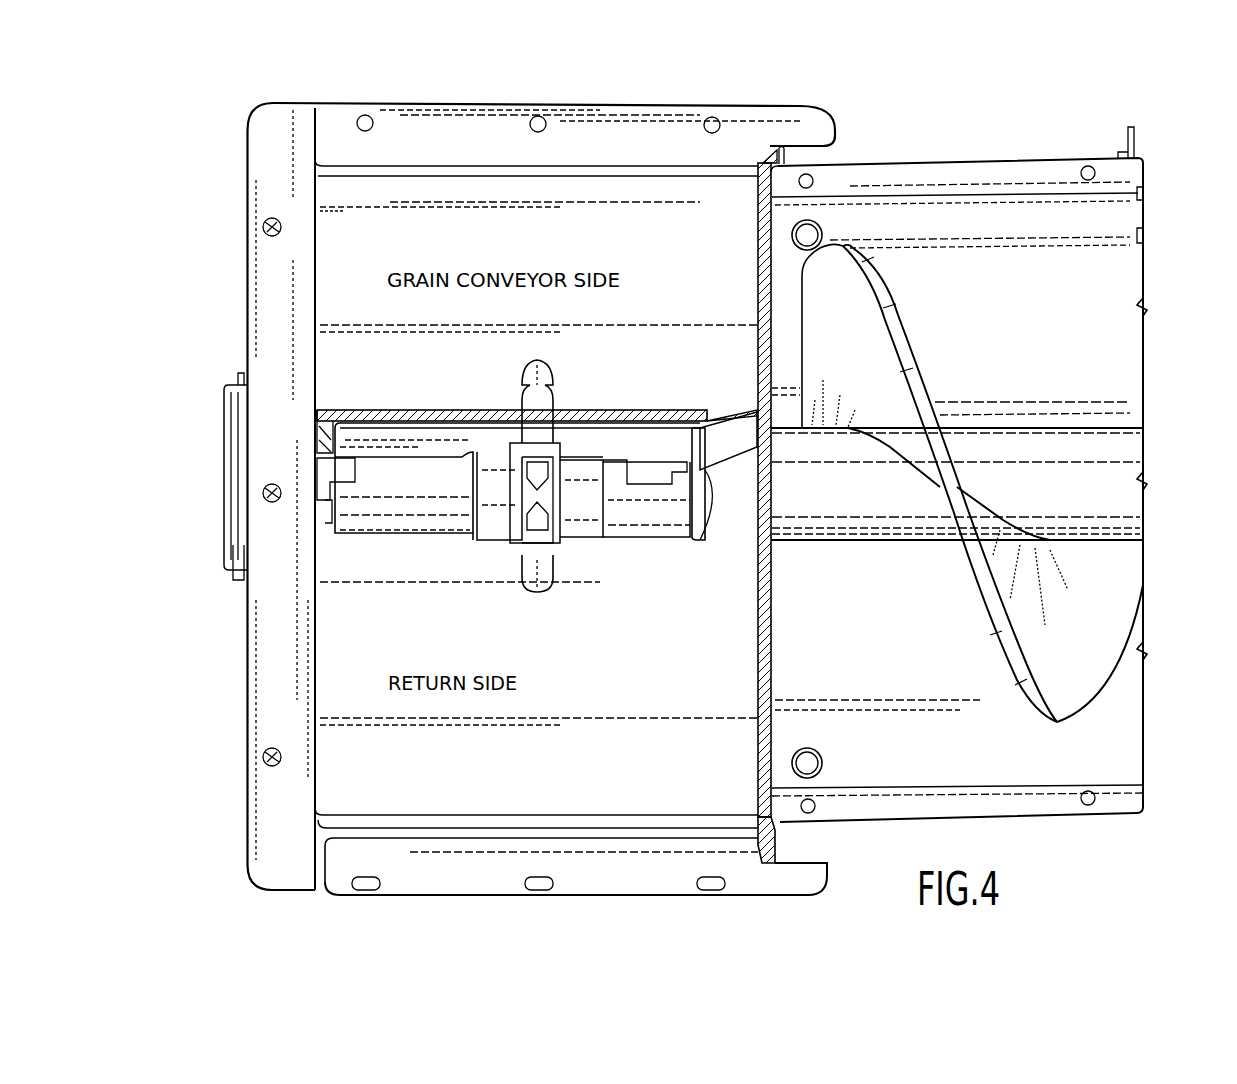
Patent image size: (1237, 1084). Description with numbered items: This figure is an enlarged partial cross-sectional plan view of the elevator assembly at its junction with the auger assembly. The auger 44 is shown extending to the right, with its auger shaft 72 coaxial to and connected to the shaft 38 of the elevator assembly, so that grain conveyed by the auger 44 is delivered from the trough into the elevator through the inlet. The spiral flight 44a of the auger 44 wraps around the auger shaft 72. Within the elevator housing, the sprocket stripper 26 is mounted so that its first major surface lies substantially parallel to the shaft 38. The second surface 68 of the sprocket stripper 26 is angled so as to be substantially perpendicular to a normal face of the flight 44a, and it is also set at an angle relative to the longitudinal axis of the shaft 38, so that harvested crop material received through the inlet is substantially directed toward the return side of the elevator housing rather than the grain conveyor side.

The sprocket stripper 26 is at (410, 450).
The shaft 38 is at (447, 537).
The auger 44 is at (1077, 690).
The flight 44a is at (917, 358).
The second surface 68 is at (700, 475).
The auger shaft 72 is at (1128, 493).